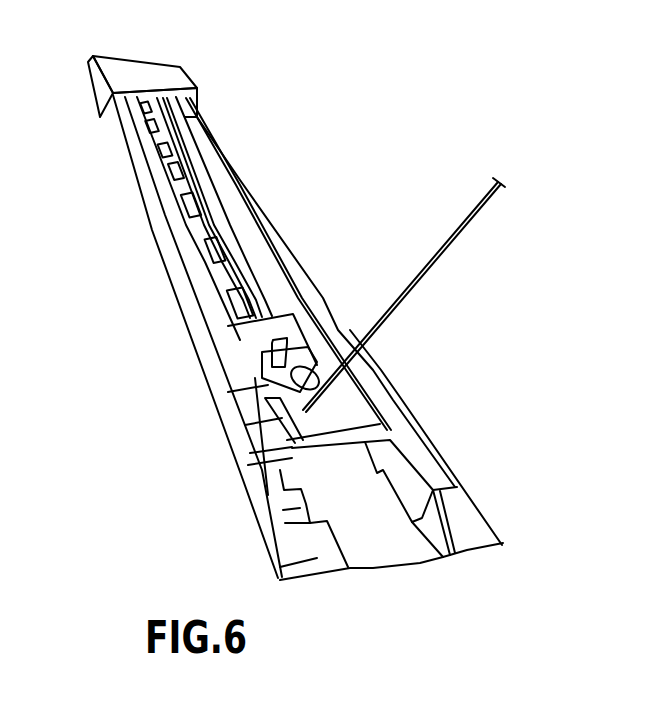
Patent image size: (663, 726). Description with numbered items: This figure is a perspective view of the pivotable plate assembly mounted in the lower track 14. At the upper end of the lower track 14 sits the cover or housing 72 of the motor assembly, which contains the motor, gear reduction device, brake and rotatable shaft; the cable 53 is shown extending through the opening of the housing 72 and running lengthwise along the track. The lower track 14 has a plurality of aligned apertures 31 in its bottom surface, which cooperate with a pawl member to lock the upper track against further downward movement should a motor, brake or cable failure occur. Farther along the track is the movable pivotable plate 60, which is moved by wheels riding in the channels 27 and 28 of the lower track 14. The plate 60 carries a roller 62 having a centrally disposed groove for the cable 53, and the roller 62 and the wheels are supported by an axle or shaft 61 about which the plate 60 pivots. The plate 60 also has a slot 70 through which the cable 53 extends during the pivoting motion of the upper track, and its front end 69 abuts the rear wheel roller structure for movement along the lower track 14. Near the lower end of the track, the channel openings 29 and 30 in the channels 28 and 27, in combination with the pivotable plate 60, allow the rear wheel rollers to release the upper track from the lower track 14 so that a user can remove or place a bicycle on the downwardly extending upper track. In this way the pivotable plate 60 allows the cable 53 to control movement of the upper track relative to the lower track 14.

The lower track 14 is at (172, 213).
The channel 27 is at (480, 533).
The channel 28 is at (278, 571).
The channel opening 29 is at (283, 511).
The channel opening 30 is at (428, 468).
The aligned apertures 31 is at (157, 135).
The cable 53 is at (248, 277).
The pivotable plate 60 is at (268, 343).
The axle or shaft 61 is at (330, 338).
The roller 62 is at (245, 425).
The front end 69 is at (290, 450).
The slot 70 is at (350, 386).
The cover or housing 72 is at (140, 88).